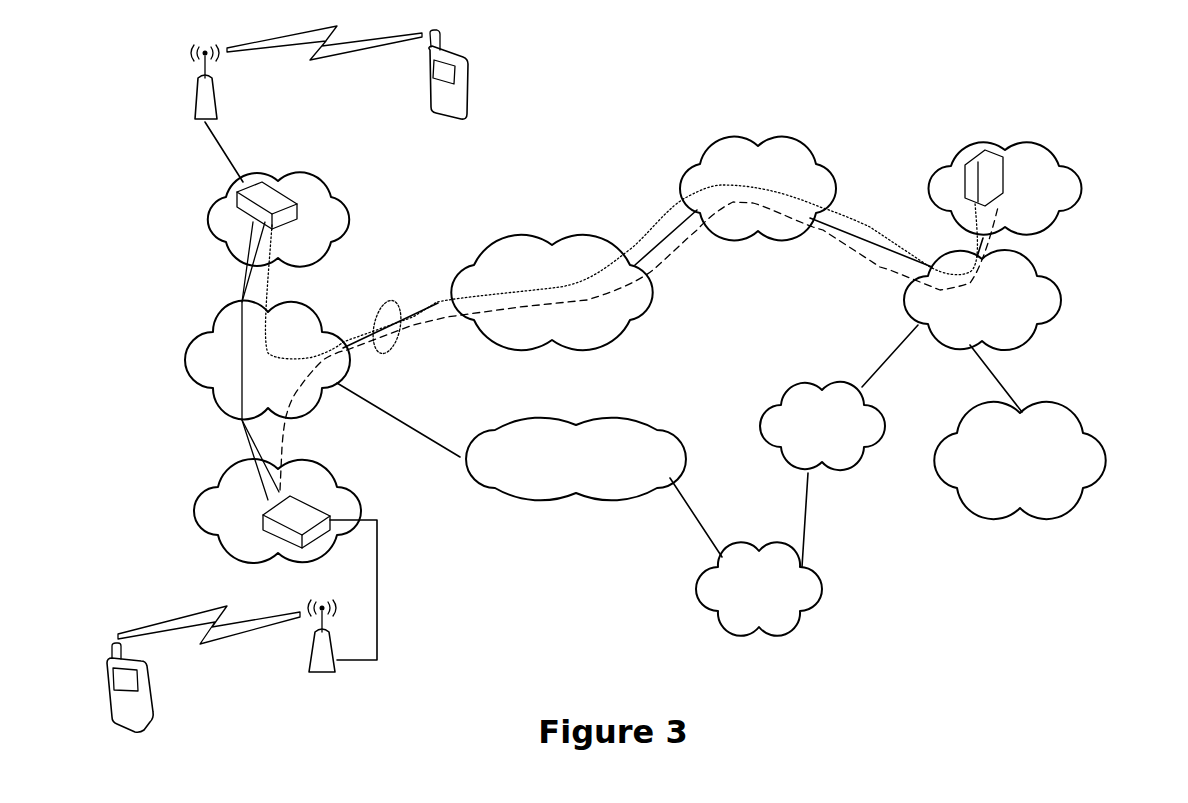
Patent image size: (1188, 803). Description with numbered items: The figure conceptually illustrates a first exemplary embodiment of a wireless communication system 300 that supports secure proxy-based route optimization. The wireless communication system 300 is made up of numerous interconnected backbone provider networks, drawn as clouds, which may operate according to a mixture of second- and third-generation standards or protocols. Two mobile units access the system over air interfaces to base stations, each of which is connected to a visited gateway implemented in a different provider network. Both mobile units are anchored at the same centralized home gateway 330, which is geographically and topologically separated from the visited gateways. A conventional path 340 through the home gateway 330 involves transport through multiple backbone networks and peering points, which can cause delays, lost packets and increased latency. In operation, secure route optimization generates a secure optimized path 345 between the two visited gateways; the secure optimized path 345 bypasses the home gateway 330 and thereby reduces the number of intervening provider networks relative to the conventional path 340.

The wireless communication system 300 is at (990, 51).
The home gateway 330 is at (990, 145).
The conventional path 340 is at (392, 357).
The secure optimized path 345 is at (237, 338).